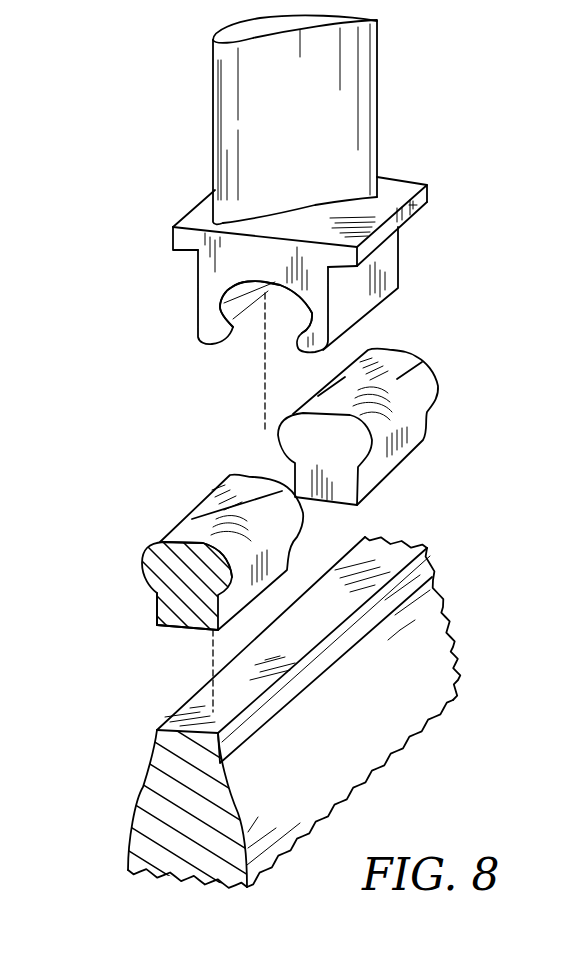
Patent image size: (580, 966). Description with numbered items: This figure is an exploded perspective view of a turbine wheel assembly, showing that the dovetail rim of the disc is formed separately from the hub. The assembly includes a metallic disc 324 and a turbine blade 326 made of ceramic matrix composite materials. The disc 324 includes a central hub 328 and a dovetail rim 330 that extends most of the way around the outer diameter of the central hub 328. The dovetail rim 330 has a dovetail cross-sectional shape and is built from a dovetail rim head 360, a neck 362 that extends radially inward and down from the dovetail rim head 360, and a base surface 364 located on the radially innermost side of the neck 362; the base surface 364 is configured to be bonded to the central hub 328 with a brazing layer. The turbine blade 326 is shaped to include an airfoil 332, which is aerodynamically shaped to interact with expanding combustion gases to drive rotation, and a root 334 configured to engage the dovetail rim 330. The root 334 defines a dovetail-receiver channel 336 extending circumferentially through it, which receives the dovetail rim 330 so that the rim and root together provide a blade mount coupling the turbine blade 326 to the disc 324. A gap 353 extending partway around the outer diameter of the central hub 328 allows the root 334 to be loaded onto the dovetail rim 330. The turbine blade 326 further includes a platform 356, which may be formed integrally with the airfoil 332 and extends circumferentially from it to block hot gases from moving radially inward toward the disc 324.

The disc 324 is at (435, 735).
The turbine blade 326 is at (445, 156).
The central hub 328 is at (417, 630).
The dovetail rim 330 is at (133, 567).
The airfoil 332 is at (360, 82).
The root 334 is at (353, 310).
The dovetail-receiver channel 336 is at (282, 307).
The gap 353 is at (313, 473).
The platform 356 is at (427, 200).
The dovetail rim head 360 is at (143, 553).
The neck 362 is at (153, 610).
The base surface 364 is at (168, 638).